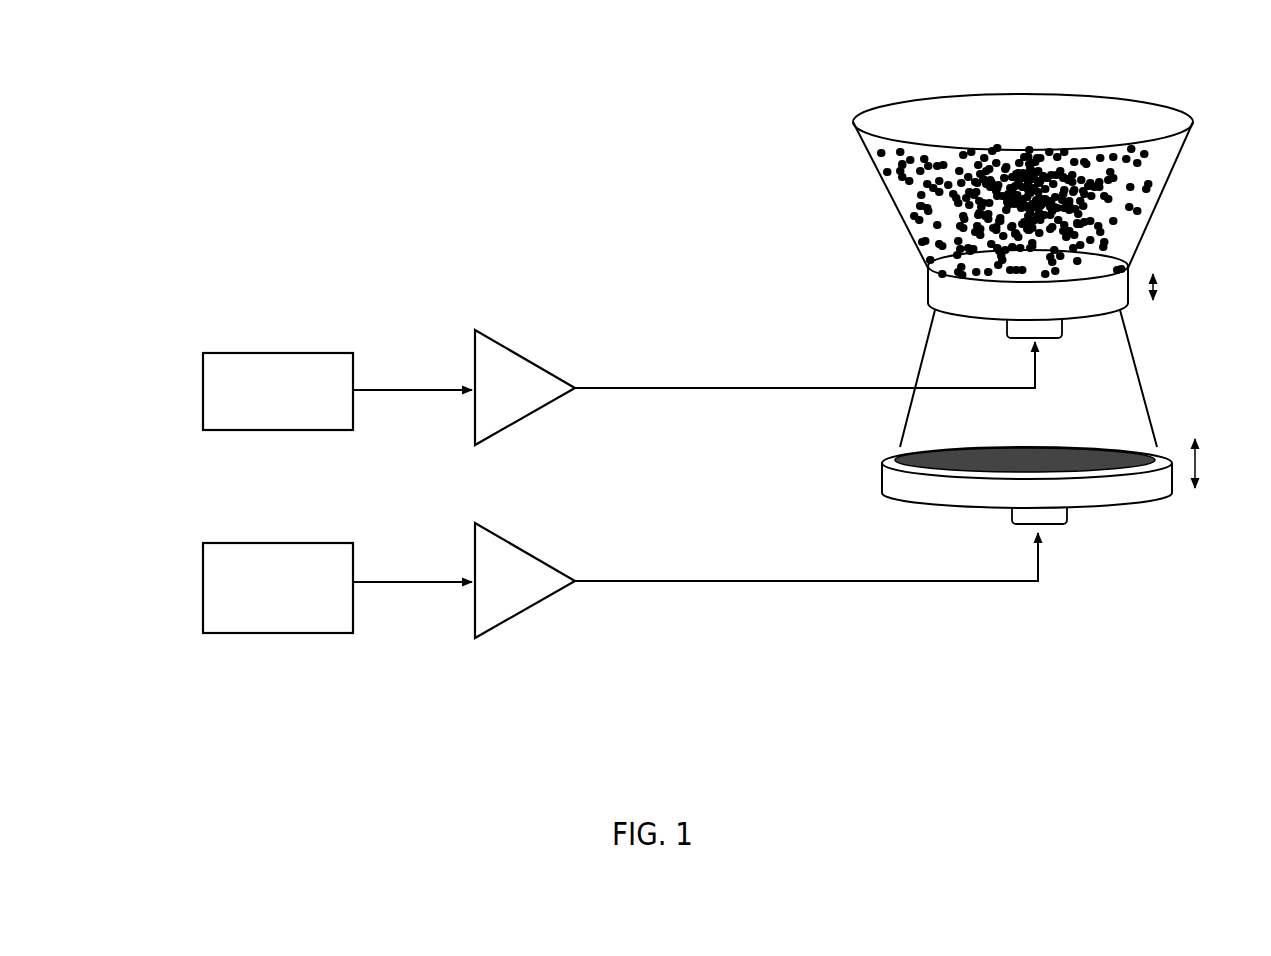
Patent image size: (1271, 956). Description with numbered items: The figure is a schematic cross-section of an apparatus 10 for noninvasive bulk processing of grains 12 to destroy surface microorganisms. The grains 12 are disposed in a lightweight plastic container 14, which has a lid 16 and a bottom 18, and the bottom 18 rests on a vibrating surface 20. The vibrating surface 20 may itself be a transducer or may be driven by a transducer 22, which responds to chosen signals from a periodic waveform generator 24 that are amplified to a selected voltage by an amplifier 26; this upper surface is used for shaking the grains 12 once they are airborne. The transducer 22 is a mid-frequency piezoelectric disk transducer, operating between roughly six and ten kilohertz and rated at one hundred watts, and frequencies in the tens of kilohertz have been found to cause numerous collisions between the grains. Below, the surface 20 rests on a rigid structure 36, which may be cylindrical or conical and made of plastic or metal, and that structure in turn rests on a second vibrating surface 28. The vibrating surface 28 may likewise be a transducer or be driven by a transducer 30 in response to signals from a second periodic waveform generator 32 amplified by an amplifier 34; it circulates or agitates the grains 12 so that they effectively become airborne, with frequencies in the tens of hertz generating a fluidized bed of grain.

The apparatus 10 is at (627, 158).
The grains 12 is at (920, 186).
The container 14 is at (1165, 196).
The lid 16 is at (1128, 117).
The bottom 18 is at (1121, 258).
The vibrating surface 20 is at (926, 284).
The transducer 22 is at (1056, 343).
The periodic waveform generator 24 is at (271, 351).
The amplifier 26 is at (538, 355).
The vibrating surface 28 is at (1148, 510).
The transducer 30 is at (1059, 533).
The periodic waveform generator 32 is at (265, 635).
The amplifier 34 is at (531, 615).
The rigid structure 36 is at (1145, 385).